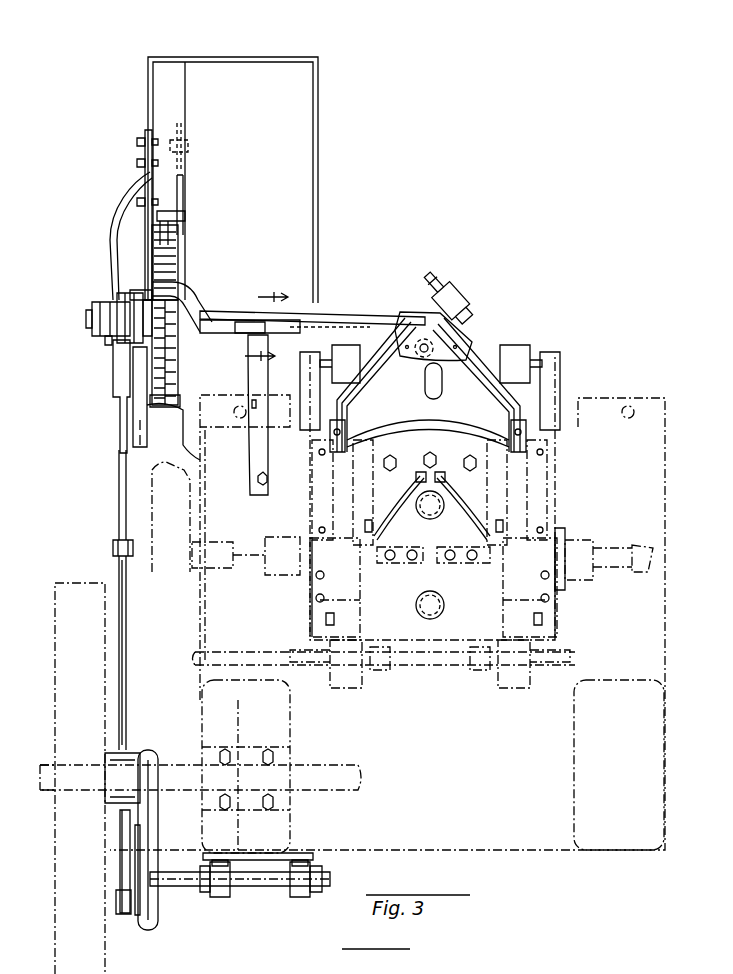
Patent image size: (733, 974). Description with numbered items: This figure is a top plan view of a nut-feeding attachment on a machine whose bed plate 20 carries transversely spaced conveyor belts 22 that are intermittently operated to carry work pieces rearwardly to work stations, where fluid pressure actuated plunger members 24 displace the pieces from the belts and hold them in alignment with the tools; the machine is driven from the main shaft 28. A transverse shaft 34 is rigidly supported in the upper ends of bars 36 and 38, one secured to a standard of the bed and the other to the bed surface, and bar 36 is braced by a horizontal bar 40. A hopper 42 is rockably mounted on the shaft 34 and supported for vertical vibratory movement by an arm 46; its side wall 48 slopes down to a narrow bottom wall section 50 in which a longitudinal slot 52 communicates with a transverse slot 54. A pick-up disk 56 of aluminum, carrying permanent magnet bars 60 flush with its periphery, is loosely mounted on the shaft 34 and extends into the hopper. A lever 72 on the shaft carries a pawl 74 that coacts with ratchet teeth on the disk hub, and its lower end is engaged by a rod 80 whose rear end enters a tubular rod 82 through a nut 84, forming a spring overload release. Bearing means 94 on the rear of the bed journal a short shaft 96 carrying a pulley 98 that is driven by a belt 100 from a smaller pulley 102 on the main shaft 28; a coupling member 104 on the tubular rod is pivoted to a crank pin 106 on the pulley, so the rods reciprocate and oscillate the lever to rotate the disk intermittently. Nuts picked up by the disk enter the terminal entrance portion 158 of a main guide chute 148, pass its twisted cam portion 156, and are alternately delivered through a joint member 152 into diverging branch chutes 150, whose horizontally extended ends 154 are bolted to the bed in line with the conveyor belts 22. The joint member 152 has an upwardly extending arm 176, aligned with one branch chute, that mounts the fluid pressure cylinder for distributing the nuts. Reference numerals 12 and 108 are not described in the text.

The direction arrow 12 is at (266, 317).
The bed plate 20 is at (203, 508).
The conveyor belts 22 is at (344, 689).
The plunger members 24 is at (603, 550).
The main shaft 28 is at (352, 783).
The transverse shaft 34 is at (88, 313).
The bar 36 is at (113, 368).
The bar 38 is at (256, 367).
The horizontal bar 40 is at (184, 402).
The hopper 42 is at (148, 97).
The arm 46 is at (133, 192).
The inclined side wall 48 is at (257, 128).
The bottom wall section 50 is at (176, 78).
The longitudinally extending slot 52 is at (185, 219).
The transverse slot 54 is at (165, 208).
The pick-up wheel or disk 56 is at (164, 407).
The permanent magnet bars 60 is at (168, 352).
The lever 72 is at (106, 332).
The pawl or dog 74 is at (134, 287).
The rod 80 is at (118, 497).
The tubular rod 82 is at (132, 669).
The nut 84 is at (113, 547).
The bearing means 94 is at (296, 893).
The short transverse shaft 96 is at (190, 887).
The pulley 98 is at (150, 862).
The belt 100 is at (166, 808).
The smaller pulley 102 is at (153, 752).
The coupling member 104 is at (125, 855).
The crank pin 106 is at (122, 912).
The switch 108 is at (184, 140).
The main guide chute 148 is at (366, 310).
The branch chutes 150 is at (478, 345).
The joint member 152 is at (410, 325).
The horizontally extended ends 154 is at (350, 434).
The cam portion 156 is at (190, 322).
The terminal entrance portion 158 is at (180, 297).
The upwardly extending arm 176 is at (466, 297).